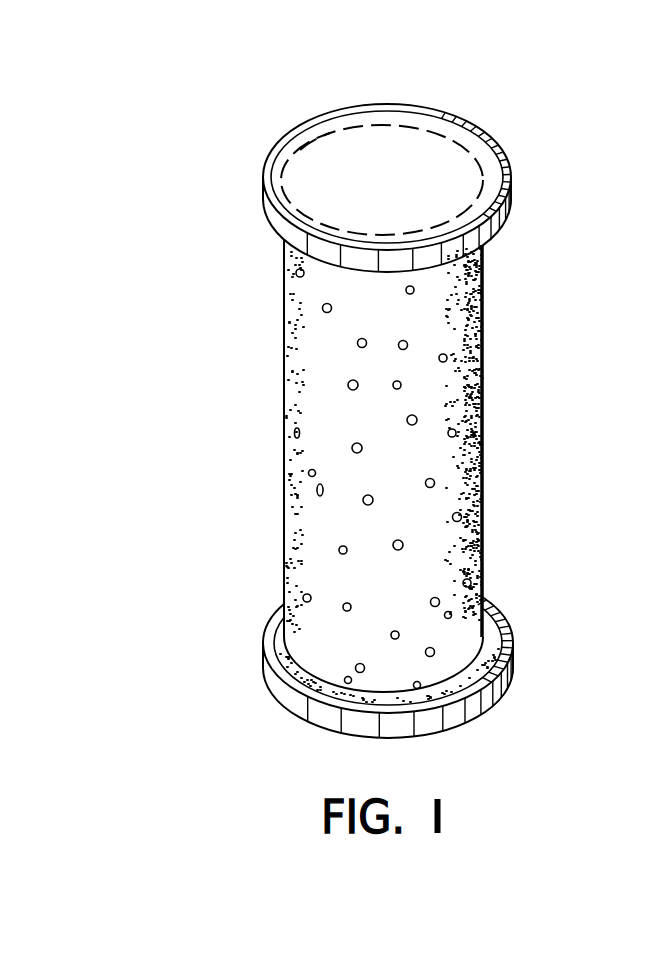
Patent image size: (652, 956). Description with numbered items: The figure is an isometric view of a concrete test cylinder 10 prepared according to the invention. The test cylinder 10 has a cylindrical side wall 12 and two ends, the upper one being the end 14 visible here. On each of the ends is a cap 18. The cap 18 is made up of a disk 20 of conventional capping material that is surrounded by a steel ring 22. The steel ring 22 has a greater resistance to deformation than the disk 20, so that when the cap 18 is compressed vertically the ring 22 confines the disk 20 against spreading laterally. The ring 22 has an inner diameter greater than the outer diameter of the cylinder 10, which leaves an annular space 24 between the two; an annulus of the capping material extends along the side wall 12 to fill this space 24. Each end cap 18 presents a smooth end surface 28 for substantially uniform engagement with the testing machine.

The concrete test cylinder 10 is at (416, 417).
The cylindrical side wall 12 is at (300, 402).
The end 14 is at (456, 160).
The cap 18 is at (397, 417).
The disk 20 is at (414, 147).
The steel ring 22 is at (508, 218).
The annular space 24 is at (285, 642).
The smooth end surface 28 is at (336, 134).